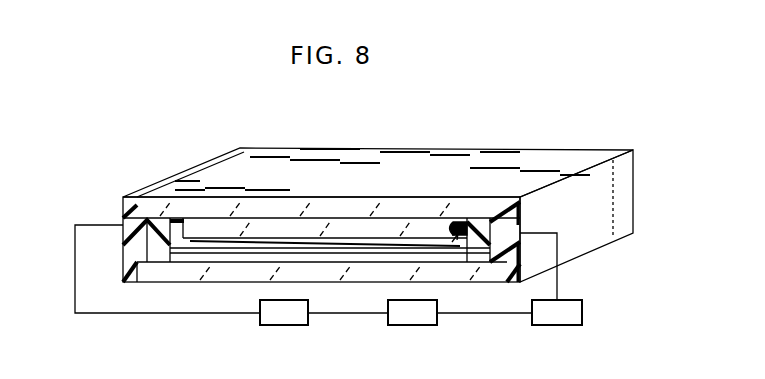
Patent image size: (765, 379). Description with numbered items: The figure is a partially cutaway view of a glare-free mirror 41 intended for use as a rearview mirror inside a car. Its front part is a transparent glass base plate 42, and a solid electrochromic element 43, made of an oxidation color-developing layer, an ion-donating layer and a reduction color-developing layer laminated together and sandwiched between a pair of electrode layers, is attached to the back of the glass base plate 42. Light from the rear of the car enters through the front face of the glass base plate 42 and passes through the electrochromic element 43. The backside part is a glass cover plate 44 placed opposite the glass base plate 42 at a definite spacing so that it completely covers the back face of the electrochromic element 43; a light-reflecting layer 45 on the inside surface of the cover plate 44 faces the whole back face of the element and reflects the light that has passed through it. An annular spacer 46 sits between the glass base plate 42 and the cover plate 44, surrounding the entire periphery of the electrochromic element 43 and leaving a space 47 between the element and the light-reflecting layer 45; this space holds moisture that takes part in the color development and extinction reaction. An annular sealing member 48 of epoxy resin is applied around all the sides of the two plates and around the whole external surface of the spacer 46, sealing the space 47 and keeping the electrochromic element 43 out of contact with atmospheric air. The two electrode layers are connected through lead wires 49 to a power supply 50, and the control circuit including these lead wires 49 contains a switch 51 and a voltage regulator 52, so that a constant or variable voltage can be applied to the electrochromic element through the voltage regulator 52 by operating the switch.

The glare-free mirror 41 is at (60, 201).
The glass base plate 42 is at (125, 212).
The solid electrochromic element 43 is at (141, 236).
The glass cover plate 44 is at (242, 270).
The light-reflecting layer 45 is at (189, 265).
The annular spacer 46 is at (150, 250).
The space 47 is at (456, 262).
The annular sealing member 48 is at (121, 274).
The lead wires 49 is at (97, 314).
The power supply 50 is at (283, 326).
The switch 51 is at (411, 326).
The voltage regulator 52 is at (556, 326).